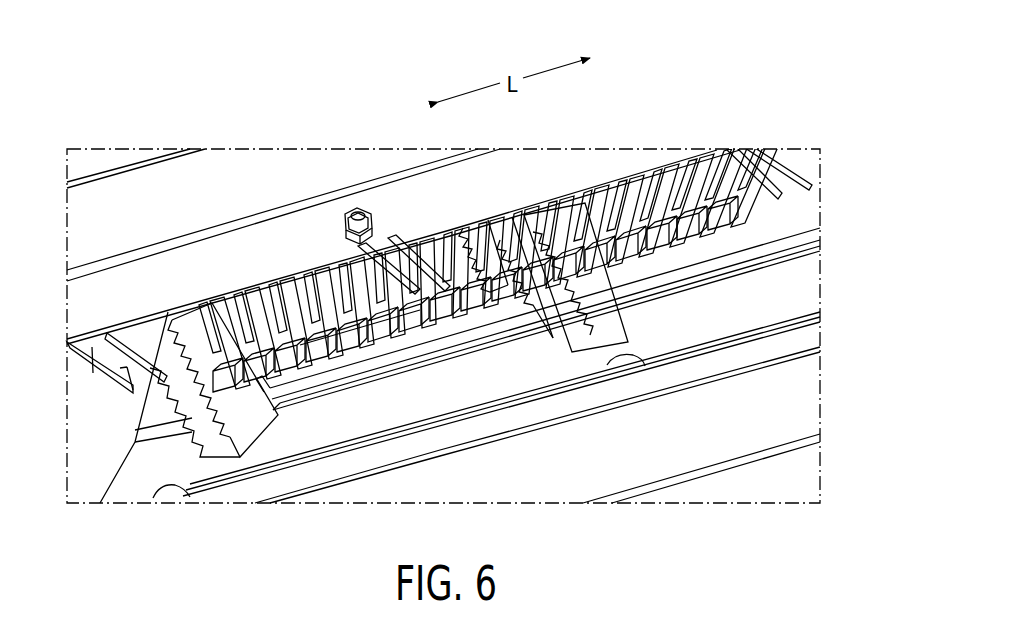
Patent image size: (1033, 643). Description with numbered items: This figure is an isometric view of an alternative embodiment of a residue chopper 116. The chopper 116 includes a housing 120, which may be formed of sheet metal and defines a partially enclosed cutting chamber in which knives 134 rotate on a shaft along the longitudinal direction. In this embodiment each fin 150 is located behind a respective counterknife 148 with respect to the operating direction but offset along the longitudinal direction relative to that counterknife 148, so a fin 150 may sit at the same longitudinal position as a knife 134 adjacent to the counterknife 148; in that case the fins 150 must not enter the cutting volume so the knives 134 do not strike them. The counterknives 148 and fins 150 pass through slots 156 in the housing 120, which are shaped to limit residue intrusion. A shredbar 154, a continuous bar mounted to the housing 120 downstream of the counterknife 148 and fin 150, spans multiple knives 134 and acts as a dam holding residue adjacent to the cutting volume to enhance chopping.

The chopper 116 is at (798, 120).
The housing 120 is at (226, 172).
The knife 134 is at (148, 330).
The counterknife 148 is at (343, 270).
The fin 150 is at (357, 337).
The shredbar 154 is at (330, 472).
The slot 156 is at (667, 167).